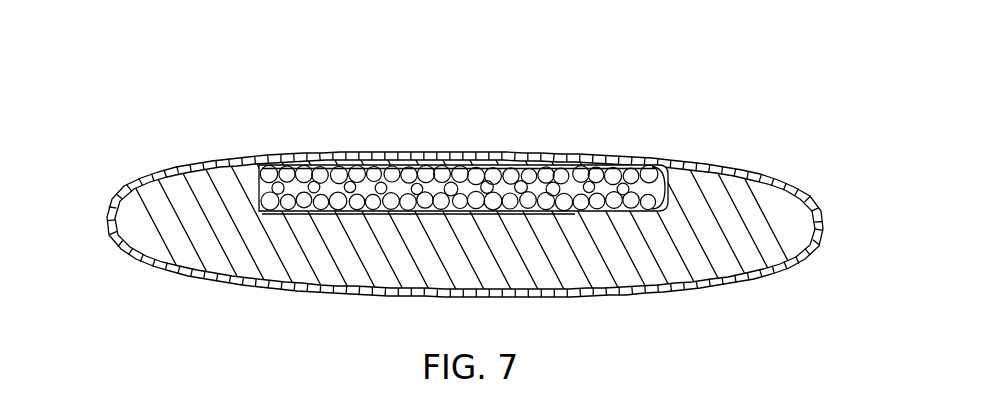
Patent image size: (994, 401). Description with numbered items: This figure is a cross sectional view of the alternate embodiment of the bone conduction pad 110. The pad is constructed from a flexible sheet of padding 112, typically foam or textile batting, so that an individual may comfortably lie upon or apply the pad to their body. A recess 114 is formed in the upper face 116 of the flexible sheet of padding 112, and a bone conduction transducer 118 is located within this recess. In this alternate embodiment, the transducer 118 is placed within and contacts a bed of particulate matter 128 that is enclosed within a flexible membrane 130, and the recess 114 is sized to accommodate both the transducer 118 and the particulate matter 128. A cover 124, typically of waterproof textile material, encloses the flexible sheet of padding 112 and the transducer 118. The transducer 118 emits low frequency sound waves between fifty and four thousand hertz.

The bone conduction pad 110 is at (642, 77).
The flexible sheet of padding 112 is at (703, 233).
The recess 114 is at (233, 177).
The upper face 116 is at (252, 163).
The bone conduction transducer 118 is at (467, 167).
The cover 124 is at (180, 170).
The particulate matter 128 is at (308, 160).
The flexible membrane 130 is at (597, 168).